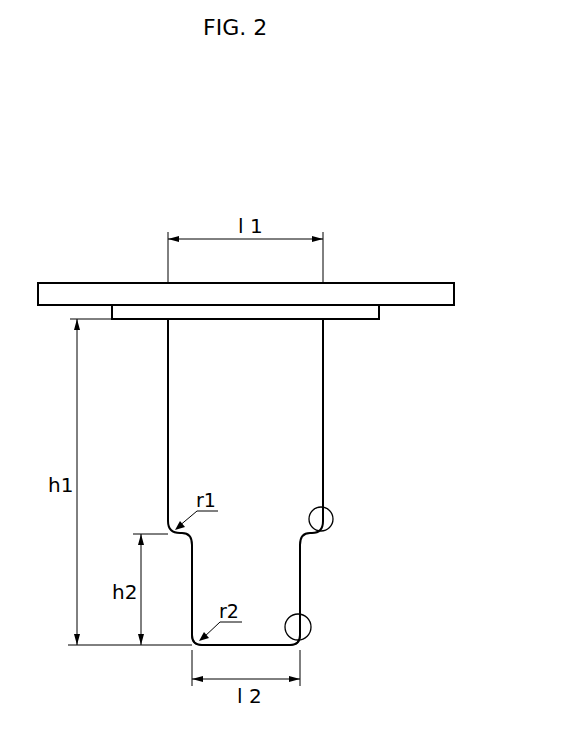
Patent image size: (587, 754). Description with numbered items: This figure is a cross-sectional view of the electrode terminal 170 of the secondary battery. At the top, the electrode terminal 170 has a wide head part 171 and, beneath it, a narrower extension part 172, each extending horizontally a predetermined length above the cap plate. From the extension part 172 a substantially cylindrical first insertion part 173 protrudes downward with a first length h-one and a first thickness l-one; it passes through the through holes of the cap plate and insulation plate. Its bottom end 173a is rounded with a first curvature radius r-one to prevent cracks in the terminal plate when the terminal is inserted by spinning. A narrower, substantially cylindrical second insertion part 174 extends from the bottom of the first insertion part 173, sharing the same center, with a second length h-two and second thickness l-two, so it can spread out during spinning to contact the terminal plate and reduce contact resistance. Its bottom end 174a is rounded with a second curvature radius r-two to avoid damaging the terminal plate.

The electrode terminal 170 is at (285, 424).
The head part 171 is at (423, 297).
The extension part 172 is at (357, 313).
The first insertion part 173 is at (308, 451).
The bottom end of first insertion part 173a is at (323, 507).
The second insertion part 174 is at (288, 577).
The bottom end of second insertion part 174a is at (300, 614).